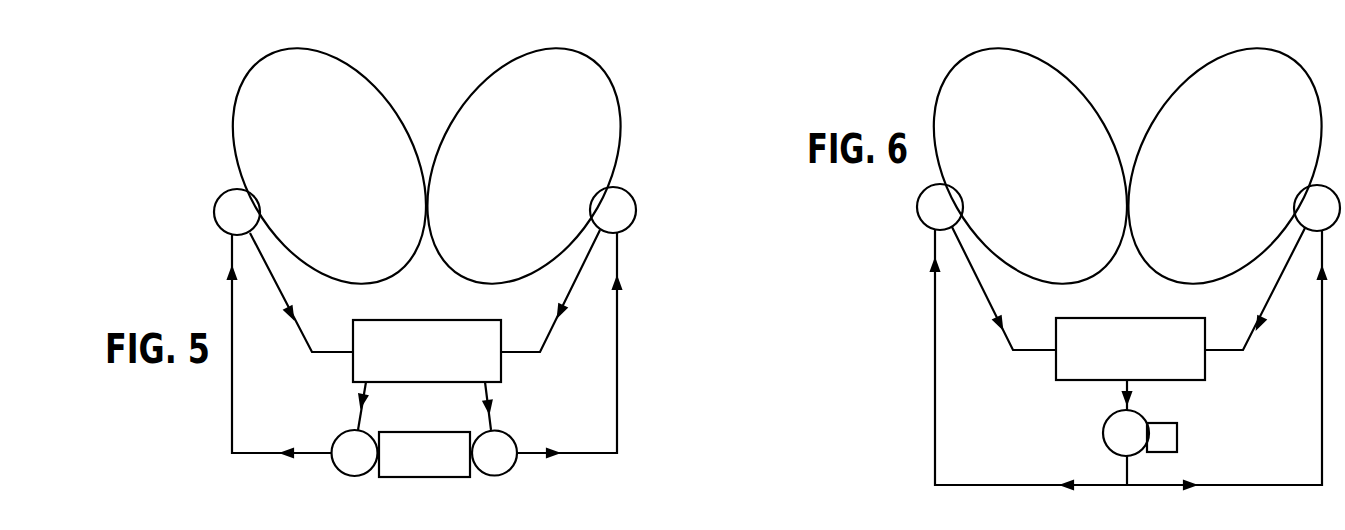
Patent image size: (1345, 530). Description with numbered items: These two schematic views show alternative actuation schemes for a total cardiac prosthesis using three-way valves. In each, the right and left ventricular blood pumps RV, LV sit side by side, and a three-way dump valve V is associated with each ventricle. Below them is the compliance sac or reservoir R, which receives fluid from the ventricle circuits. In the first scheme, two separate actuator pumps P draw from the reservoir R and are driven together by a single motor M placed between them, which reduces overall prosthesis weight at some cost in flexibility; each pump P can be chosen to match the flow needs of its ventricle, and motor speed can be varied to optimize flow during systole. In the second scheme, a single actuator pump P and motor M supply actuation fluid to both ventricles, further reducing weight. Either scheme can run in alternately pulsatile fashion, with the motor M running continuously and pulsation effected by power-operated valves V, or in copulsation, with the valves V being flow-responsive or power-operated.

In FIG. 5, the right ventricular blood pump RV is at (329, 166).
In FIG. 6, the right ventricular blood pump RV is at (1030, 166).
In FIG. 5, the left ventricular blood pump LV is at (524, 166).
In FIG. 6, the left ventricular blood pump LV is at (1217, 166).
In FIG. 5, the three-way dump valve V is at (425, 211).
In FIG. 6, the three-way dump valve V is at (1128, 207).
In FIG. 5, the compliance sac or reservoir R is at (427, 351).
In FIG. 6, the compliance sac or reservoir R is at (1130, 349).
In FIG. 5, the actuator pump P is at (425, 453).
In FIG. 6, the actuator pump P is at (1126, 433).
In FIG. 5, the motor M is at (424, 454).
In FIG. 6, the motor M is at (1162, 437).